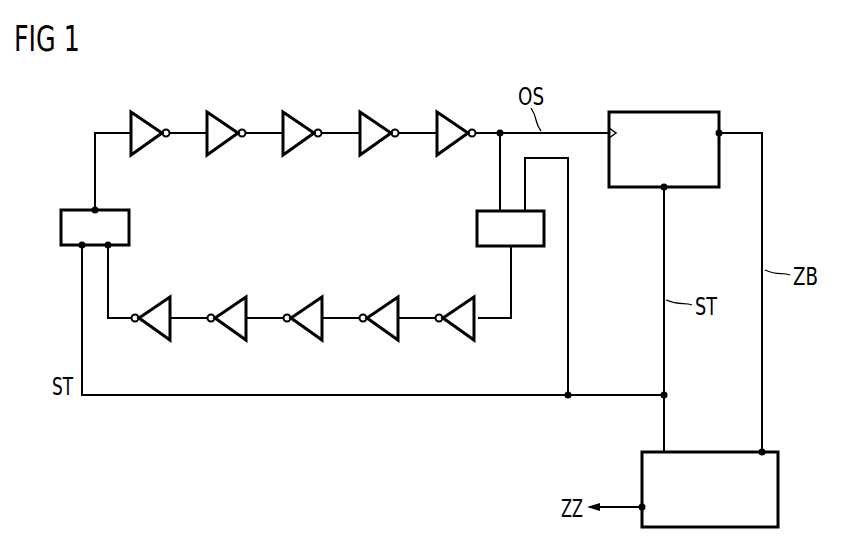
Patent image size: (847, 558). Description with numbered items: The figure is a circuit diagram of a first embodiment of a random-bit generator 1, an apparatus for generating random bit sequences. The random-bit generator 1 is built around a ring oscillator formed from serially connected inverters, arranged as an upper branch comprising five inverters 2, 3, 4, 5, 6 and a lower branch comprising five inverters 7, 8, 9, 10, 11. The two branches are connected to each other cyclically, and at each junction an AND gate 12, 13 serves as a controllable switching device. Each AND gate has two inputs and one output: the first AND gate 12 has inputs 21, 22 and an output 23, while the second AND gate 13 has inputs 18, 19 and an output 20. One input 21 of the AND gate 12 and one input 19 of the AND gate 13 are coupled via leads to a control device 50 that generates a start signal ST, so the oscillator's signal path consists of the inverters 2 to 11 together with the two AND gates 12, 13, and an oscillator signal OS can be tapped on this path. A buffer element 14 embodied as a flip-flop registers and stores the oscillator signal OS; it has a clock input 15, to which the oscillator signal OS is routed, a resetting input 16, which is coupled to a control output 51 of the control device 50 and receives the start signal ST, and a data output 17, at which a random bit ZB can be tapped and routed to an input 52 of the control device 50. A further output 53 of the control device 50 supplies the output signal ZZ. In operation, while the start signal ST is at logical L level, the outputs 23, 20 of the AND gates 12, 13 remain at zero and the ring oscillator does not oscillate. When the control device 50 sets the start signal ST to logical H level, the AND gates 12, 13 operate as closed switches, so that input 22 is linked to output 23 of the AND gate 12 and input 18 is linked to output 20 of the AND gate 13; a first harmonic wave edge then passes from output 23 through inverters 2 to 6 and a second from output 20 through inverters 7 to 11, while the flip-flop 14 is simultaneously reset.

The random-bit generator 1 is at (201, 62).
The inverter 2 is at (152, 121).
The inverter 3 is at (228, 121).
The inverter 4 is at (305, 121).
The inverter 5 is at (382, 121).
The inverter 6 is at (459, 121).
The inverter 7 is at (456, 338).
The inverter 8 is at (379, 338).
The inverter 9 is at (304, 338).
The inverter 10 is at (228, 338).
The inverter 11 is at (152, 338).
The AND gate 12 is at (61, 227).
The AND gate 13 is at (477, 227).
The buffer element 14 is at (663, 111).
The clock input 15 is at (606, 130).
The resetting input 16 is at (667, 190).
The data output 17 is at (722, 130).
The input 18 is at (497, 210).
The input 19 is at (526, 210).
The output 20 is at (509, 248).
The input 21 is at (80, 248).
The input 22 is at (110, 248).
The output 23 is at (93, 208).
The control device 50 is at (779, 495).
The control output 51 is at (662, 451).
The input 52 is at (766, 451).
The output of counter 53 is at (640, 510).